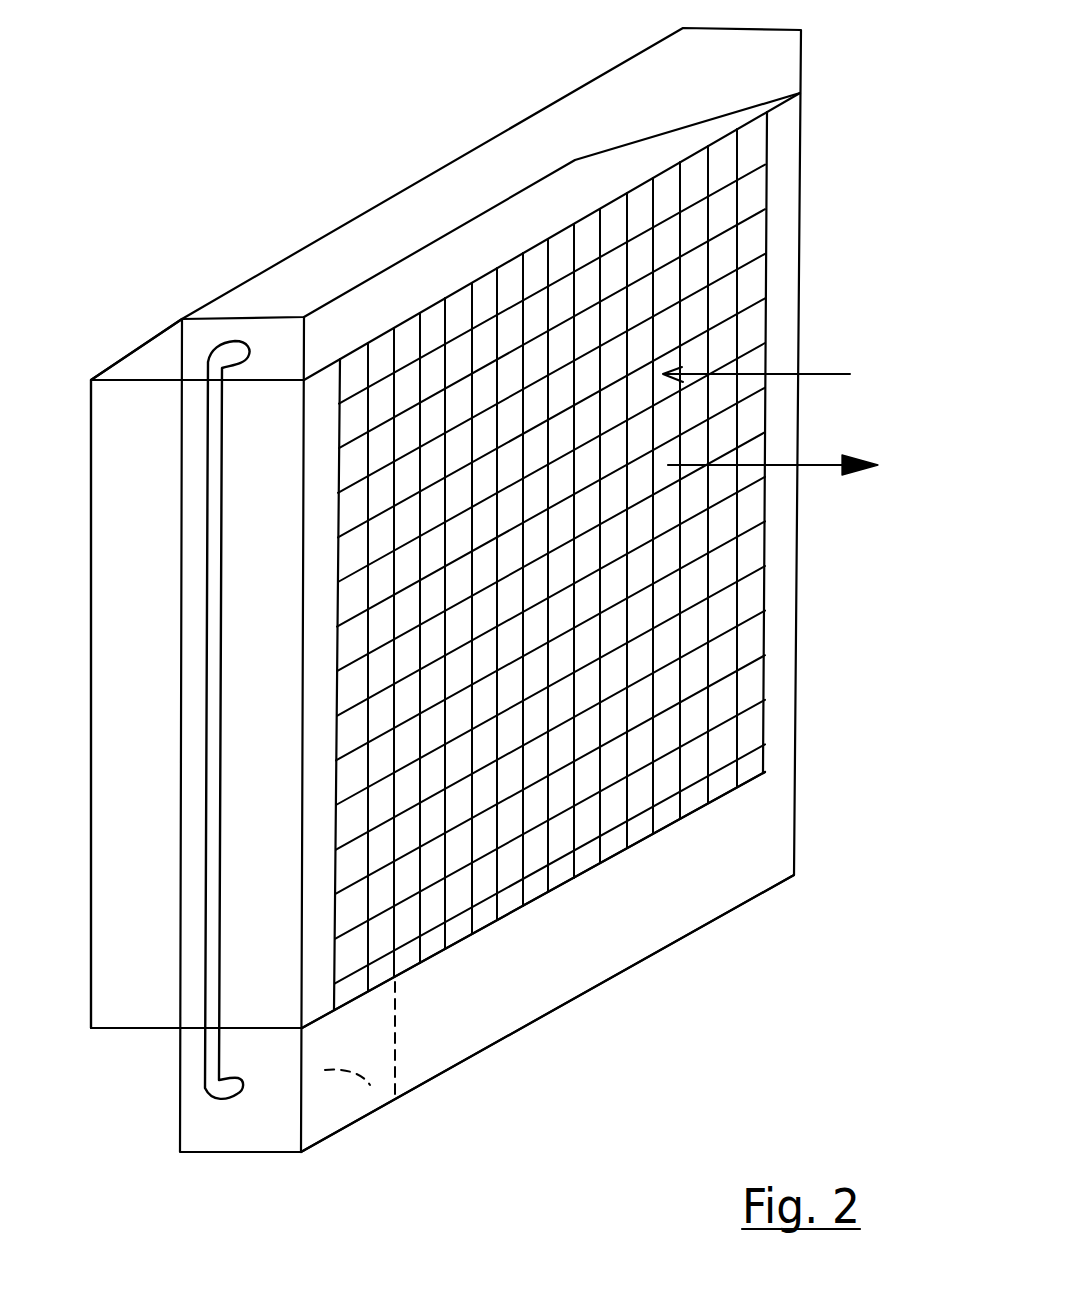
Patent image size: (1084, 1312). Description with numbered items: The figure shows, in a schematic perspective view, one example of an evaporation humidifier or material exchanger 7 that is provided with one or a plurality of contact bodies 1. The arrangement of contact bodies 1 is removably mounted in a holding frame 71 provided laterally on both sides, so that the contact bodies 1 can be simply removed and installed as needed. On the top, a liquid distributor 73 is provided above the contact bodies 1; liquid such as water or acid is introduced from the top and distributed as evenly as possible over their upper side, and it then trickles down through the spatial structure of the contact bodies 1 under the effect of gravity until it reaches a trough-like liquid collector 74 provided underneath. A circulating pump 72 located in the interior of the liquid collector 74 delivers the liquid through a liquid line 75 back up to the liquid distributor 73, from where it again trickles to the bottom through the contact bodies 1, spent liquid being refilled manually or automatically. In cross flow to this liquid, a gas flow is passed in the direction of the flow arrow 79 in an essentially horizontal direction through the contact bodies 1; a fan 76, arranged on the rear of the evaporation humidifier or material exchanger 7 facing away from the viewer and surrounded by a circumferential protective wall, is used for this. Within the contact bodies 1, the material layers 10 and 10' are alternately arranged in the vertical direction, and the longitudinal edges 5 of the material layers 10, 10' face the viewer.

The evaporation humidifier or material exchanger 7 is at (377, 122).
The liquid distributor 73 is at (370, 243).
The holding frame 71 is at (787, 180).
The liquid collector 74 is at (613, 918).
The circulating pump 72 is at (370, 1087).
The fan 76 is at (150, 463).
The liquid line 75 is at (217, 460).
The longitudinal edges 5 is at (710, 583).
The material layer 10 is at (767, 639).
The material layer 10' is at (784, 720).
The contact body 1 is at (770, 364).
The flow arrow 79 is at (820, 467).